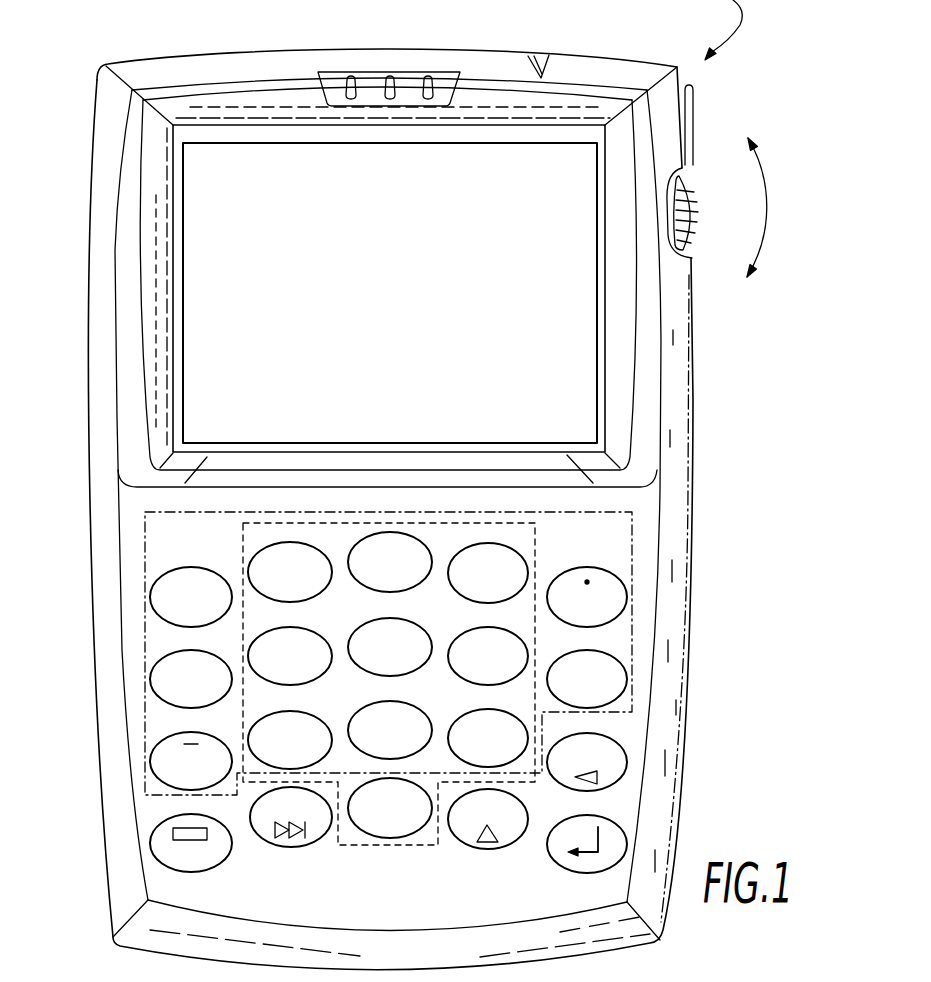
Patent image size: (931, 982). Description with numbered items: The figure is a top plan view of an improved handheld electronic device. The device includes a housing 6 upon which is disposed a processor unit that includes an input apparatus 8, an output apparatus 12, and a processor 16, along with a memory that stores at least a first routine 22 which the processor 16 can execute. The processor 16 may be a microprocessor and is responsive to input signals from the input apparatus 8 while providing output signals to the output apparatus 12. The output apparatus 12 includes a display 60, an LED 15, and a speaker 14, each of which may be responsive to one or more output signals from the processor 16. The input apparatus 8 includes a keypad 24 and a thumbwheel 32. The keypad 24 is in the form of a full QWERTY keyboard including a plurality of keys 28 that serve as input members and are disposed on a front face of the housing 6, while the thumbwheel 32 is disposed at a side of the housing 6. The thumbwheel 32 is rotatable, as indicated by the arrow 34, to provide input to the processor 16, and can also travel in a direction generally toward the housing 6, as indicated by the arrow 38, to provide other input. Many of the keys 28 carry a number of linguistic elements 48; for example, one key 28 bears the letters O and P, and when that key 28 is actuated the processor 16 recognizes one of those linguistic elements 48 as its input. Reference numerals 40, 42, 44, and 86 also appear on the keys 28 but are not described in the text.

The housing 6 is at (580, 53).
The input apparatus 8 is at (660, 512).
The output apparatus 12 is at (462, 108).
The speaker 14 is at (384, 78).
The LED 15 is at (537, 57).
The processor 16 is at (130, 538).
The first routine 22 is at (127, 508).
The keypad 24 is at (632, 650).
The keys 28 is at (410, 706).
The thumbwheel 32 is at (688, 202).
The arrow 34 is at (772, 190).
The arrow 38 is at (720, 214).
The arrow key 40 is at (291, 840).
The arrow symbol 42 is at (270, 828).
The enter key 44 is at (607, 860).
The linguistic elements 48 is at (178, 690).
The display 60 is at (535, 186).
The delete key 86 is at (621, 780).